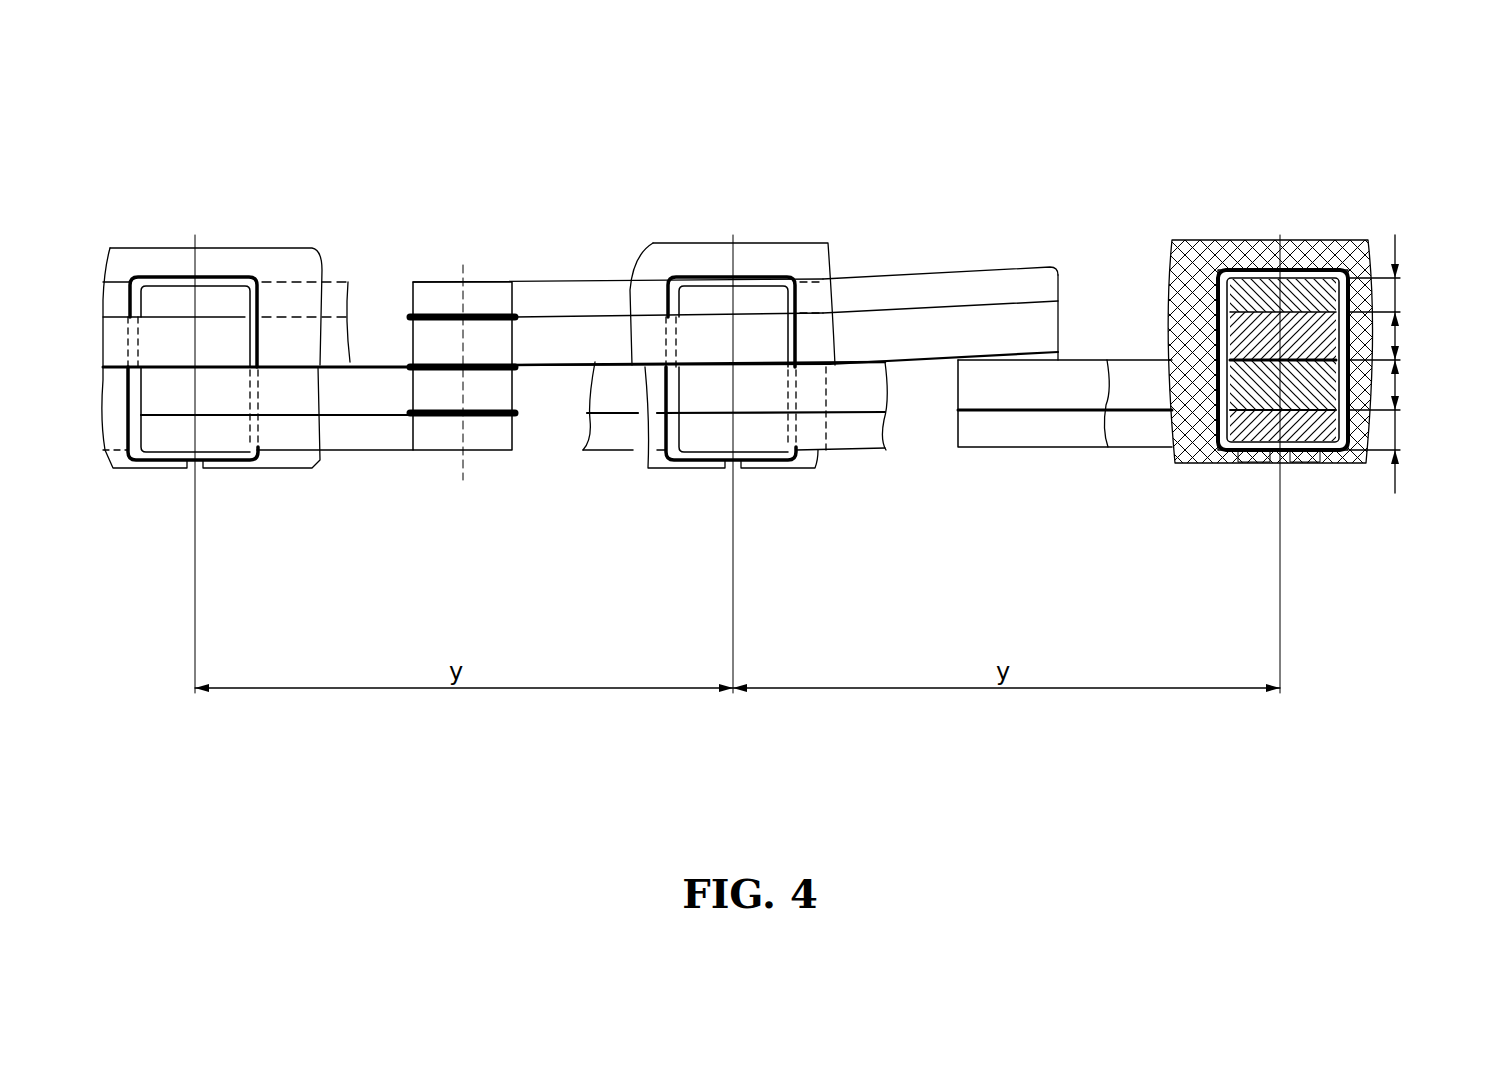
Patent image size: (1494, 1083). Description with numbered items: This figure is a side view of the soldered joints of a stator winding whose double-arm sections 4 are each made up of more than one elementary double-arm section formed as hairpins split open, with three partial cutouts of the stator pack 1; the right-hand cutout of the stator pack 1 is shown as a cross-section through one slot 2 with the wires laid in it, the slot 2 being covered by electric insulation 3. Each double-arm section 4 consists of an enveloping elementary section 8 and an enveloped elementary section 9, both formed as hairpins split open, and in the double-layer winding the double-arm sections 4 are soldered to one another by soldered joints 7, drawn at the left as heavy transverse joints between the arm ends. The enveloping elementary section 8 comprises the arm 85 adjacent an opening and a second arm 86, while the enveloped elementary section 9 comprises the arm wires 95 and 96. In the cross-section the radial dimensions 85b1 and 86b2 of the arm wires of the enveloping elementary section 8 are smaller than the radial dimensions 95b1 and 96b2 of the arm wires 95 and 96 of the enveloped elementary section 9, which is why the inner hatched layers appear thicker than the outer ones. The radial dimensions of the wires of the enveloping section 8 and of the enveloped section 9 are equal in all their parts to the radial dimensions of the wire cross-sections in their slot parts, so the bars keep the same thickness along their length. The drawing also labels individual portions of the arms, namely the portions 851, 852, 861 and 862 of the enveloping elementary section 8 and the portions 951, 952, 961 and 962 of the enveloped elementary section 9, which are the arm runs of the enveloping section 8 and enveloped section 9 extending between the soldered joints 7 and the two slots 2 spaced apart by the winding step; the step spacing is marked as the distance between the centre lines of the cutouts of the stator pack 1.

The stator pack 1 is at (1345, 253).
The slot 2 is at (1302, 255).
The electric insulation 3 is at (1282, 272).
The double-arm section 4 is at (1068, 250).
The soldered joint 7 is at (445, 412).
The enveloping elementary section 8 is at (1042, 413).
The enveloped elementary section 9 is at (937, 328).
The arm adjacent an opening 85 is at (1262, 428).
The arm of the enveloping elementary section 86 is at (1263, 300).
The arm wire of the enveloped elementary section 95 is at (1303, 387).
The arm wire of the enveloped elementary section 96 is at (1257, 345).
The outer bus bar first segment 851 is at (298, 435).
The outer bus bar second segment 852 is at (1135, 435).
The outer bus bar first segment 861 is at (615, 297).
The outer bus bar second segment 862 is at (915, 295).
The inner bus bar first segment 951 is at (282, 392).
The inner bus bar second segment 952 is at (1073, 383).
The inner bus bar first segment 961 is at (646, 343).
The inner bus bar second segment 962 is at (1005, 325).
The radial dimension of arm 86 wire 86b2 is at (1408, 280).
The radial dimension of arm 96 wire 96b2 is at (1408, 336).
The radial dimension of arm 95 wire 95b1 is at (1408, 385).
The radial dimension of arm 85 wire 85b1 is at (1408, 451).